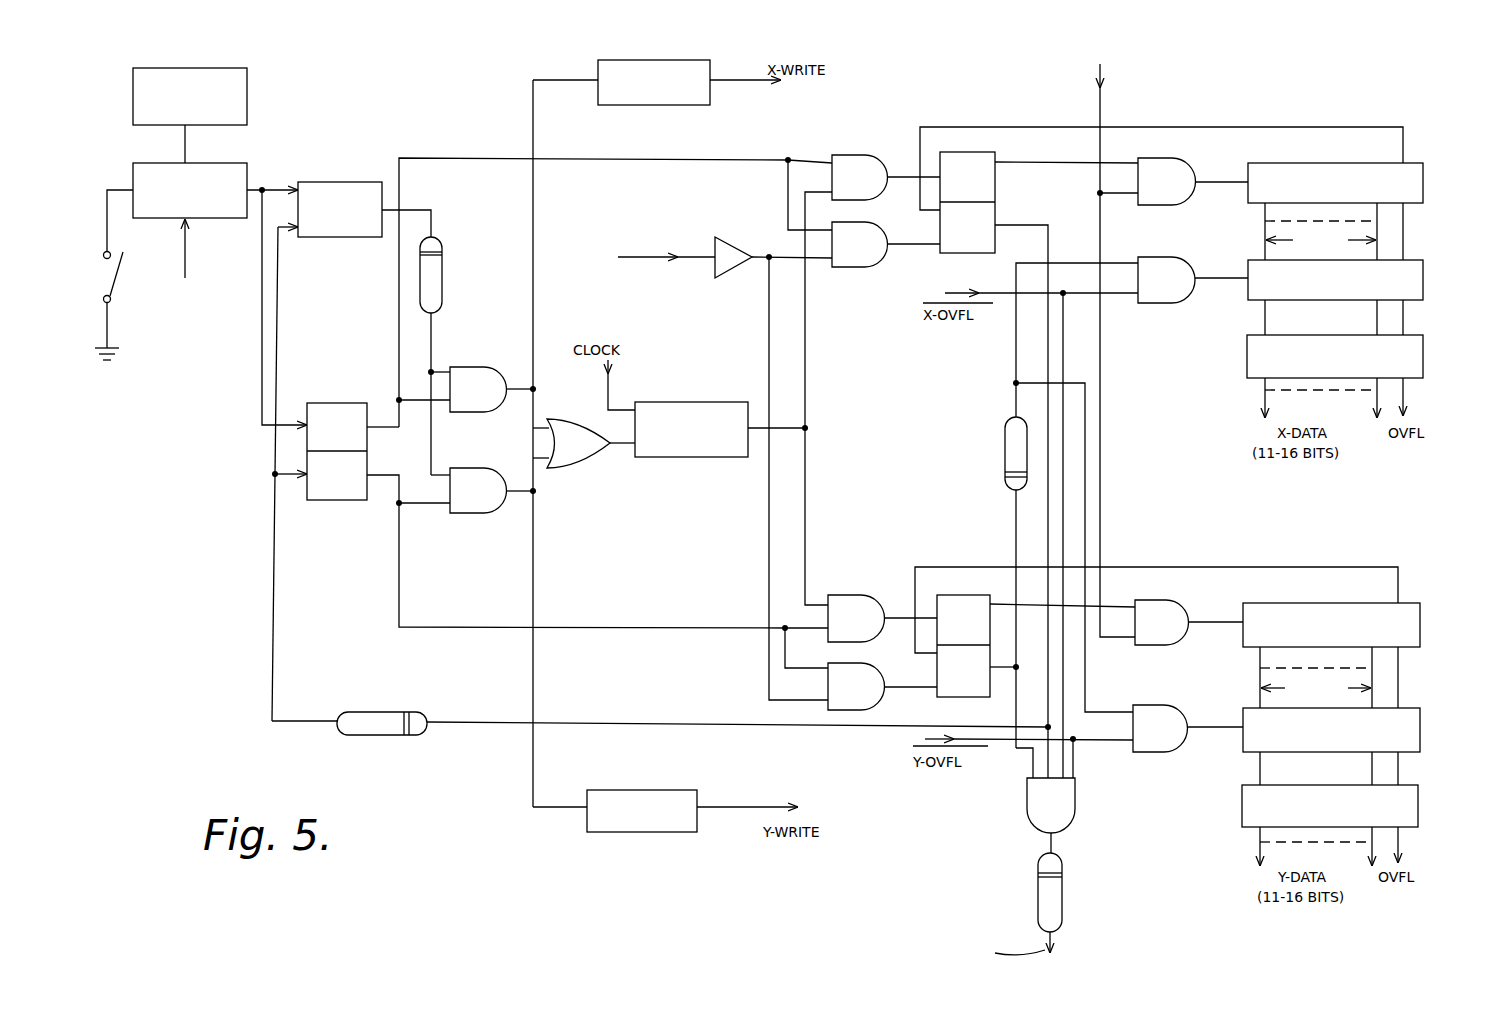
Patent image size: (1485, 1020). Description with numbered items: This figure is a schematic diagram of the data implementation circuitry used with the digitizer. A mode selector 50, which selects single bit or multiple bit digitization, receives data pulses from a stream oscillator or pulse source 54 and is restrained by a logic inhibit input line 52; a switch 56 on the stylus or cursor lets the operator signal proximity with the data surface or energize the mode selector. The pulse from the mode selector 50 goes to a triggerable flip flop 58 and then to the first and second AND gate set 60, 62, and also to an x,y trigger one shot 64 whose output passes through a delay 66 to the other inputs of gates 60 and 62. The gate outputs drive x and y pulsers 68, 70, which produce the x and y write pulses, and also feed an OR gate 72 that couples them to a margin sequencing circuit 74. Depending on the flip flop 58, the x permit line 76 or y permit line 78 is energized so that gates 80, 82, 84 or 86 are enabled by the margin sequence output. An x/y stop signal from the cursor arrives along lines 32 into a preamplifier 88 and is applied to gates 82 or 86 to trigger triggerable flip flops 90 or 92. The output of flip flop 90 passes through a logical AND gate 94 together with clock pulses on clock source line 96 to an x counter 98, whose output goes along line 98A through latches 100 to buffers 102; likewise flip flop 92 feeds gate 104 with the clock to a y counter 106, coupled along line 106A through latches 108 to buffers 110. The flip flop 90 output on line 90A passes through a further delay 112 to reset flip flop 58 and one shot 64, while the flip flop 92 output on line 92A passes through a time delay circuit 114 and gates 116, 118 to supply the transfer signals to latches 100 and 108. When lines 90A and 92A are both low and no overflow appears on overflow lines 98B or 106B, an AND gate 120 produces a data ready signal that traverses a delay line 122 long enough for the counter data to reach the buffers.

The lines 32 is at (700, 262).
The mode selector 50 is at (228, 163).
The logic inhibit input line 52 is at (190, 246).
The source of data pulses 54 is at (237, 67).
The switch 56 is at (118, 278).
The triggerable flip flop 58 is at (345, 403).
The AND gate 60 is at (475, 367).
The AND gate 62 is at (465, 513).
The x,y trigger 64 is at (336, 182).
The delay 66 is at (442, 302).
The x pulser 68 is at (678, 60).
The y pulser 70 is at (668, 790).
The OR gate 72 is at (572, 470).
The margin sequencing circuit 74 is at (710, 402).
The x permit line 76 is at (458, 158).
The y permit line 78 is at (456, 627).
The gate 80 is at (858, 155).
The gate 82 is at (857, 268).
The gate 84 is at (845, 595).
The gate 86 is at (878, 708).
The preamplifier 88 is at (727, 242).
The triggerable flip flop 90 is at (990, 152).
The line 90A is at (1030, 225).
The triggerable flip flop 92 is at (950, 595).
The line 92A is at (1013, 708).
The logical AND gate 94 is at (1180, 158).
The clock source line 96 is at (1108, 104).
The x counter 98 is at (1415, 163).
The line 98A is at (1321, 237).
The overflow line 98B is at (1404, 252).
The latches 100 is at (1425, 280).
The buffers 102 is at (1423, 345).
The gate 104 is at (1160, 600).
The y counter 106 is at (1445, 580).
The line 106A is at (1316, 685).
The overflow line 106B is at (1400, 692).
The latches 108 is at (1443, 710).
The buffers 110 is at (1420, 797).
The delay 112 is at (390, 712).
The time delay circuit 114 is at (1003, 460).
The gate 116 is at (1176, 257).
The gate 118 is at (1160, 705).
The AND gate 120 is at (1027, 803).
The delay line 122 is at (1063, 908).